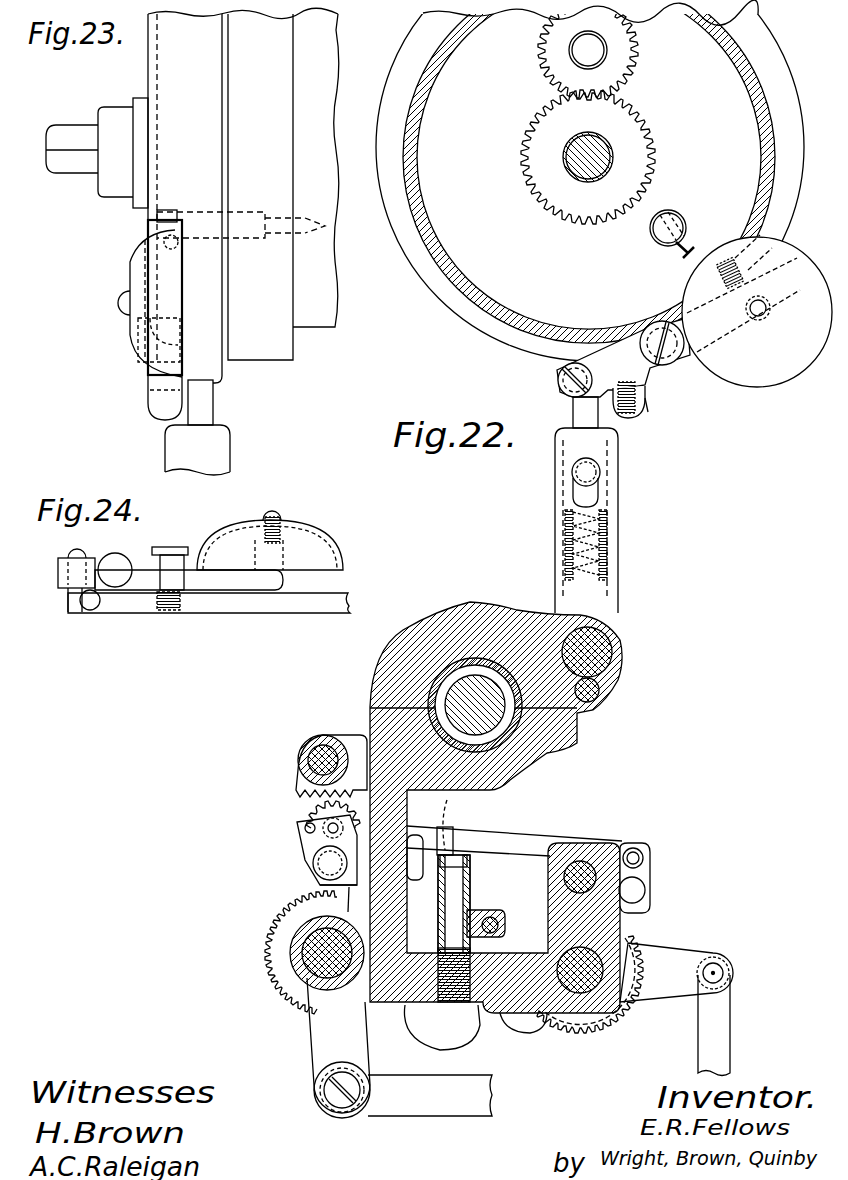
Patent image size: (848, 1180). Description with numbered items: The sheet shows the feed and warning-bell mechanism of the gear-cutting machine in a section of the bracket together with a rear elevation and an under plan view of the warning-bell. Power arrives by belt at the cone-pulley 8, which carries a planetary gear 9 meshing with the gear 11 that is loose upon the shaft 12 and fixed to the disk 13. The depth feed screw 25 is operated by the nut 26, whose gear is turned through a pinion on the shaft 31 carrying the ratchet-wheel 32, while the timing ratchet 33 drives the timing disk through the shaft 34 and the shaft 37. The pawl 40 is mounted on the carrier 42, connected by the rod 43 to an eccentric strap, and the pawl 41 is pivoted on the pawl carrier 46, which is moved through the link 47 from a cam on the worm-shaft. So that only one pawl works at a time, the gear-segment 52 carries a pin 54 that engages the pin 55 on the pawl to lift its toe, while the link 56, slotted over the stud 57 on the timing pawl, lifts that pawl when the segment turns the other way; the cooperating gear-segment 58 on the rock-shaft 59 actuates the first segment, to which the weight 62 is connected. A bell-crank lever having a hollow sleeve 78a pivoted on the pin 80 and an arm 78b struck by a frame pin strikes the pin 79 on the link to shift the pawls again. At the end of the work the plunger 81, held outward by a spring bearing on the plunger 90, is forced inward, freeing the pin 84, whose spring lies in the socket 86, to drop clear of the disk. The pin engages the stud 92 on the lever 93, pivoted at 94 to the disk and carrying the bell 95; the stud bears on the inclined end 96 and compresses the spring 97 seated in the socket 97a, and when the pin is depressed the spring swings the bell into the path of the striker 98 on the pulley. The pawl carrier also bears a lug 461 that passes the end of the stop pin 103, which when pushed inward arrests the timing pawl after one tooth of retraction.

In FIG. 23, the cone-pulley 8 is at (270, 312).
In FIG. 22, the planetary gear 9 is at (553, 55).
In FIG. 22, the gear 11 is at (547, 137).
In FIG. 23, the shaft 12 is at (115, 170).
In FIG. 22, the shaft 12 is at (613, 147).
In FIG. 23, the disk 13 is at (168, 182).
In FIG. 24, the disk 13 is at (210, 603).
In FIG. 22, the disk 13 is at (452, 265).
In FIG. 22, the depth feed screw 25 is at (577, 722).
In FIG. 22, the nut 26 is at (490, 732).
In FIG. 22, the shaft 31 is at (305, 973).
In FIG. 22, the ratchet-wheel 32 is at (282, 943).
In FIG. 22, the ratchet 33 is at (603, 1020).
In FIG. 22, the shaft 34 is at (623, 947).
In FIG. 22, the shaft 37 is at (580, 860).
In FIG. 22, the pawl 40 is at (360, 888).
In FIG. 22, the pawl 41 is at (648, 885).
In FIG. 22, the carrier 42 is at (333, 1040).
In FIG. 22, the rod 43 is at (433, 1107).
In FIG. 22, the pawl carrier 46 is at (667, 983).
In FIG. 22, the link 47 is at (718, 1043).
In FIG. 22, the gear-segment 52 is at (303, 818).
In FIG. 22, the pin 54 is at (300, 828).
In FIG. 22, the pin 55 is at (297, 840).
In FIG. 22, the link 56 is at (507, 840).
In FIG. 22, the stud 57 is at (641, 847).
In FIG. 22, the gear-segment 58 is at (305, 792).
In FIG. 22, the rock-shaft 59 is at (305, 747).
In FIG. 22, the weight 62 is at (418, 882).
In FIG. 22, the sleeve 78a is at (473, 912).
In FIG. 22, the arm 78b is at (498, 922).
In FIG. 22, the pin 79 is at (447, 822).
In FIG. 22, the pin 80 is at (458, 888).
In FIG. 22, the plunger 81 is at (612, 648).
In FIG. 23, the pin 84 is at (213, 403).
In FIG. 22, the pin 84 is at (582, 415).
In FIG. 22, the socket 86 is at (608, 537).
In FIG. 22, the plunger 90 is at (598, 690).
In FIG. 23, the stud 92 is at (213, 381).
In FIG. 24, the stud 92 is at (68, 605).
In FIG. 22, the stud 92 is at (562, 367).
In FIG. 24, the lever 93 is at (245, 590).
In FIG. 22, the lever 93 is at (643, 380).
In FIG. 24, the pivot 94 is at (183, 547).
In FIG. 22, the pivot 94 is at (672, 360).
In FIG. 23, the bell 95 is at (137, 265).
In FIG. 24, the bell 95 is at (310, 538).
In FIG. 22, the bell 95 is at (773, 365).
In FIG. 22, the inclined end 96 is at (558, 390).
In FIG. 22, the spring 97 is at (628, 422).
In FIG. 23, the socket 97a is at (163, 403).
In FIG. 24, the socket 97a is at (115, 556).
In FIG. 22, the socket 97a is at (648, 418).
In FIG. 23, the striker 98 is at (177, 212).
In FIG. 22, the striker 98 is at (692, 245).
In FIG. 22, the pin 103 is at (507, 1000).
In FIG. 22, the lug 461 is at (523, 1025).